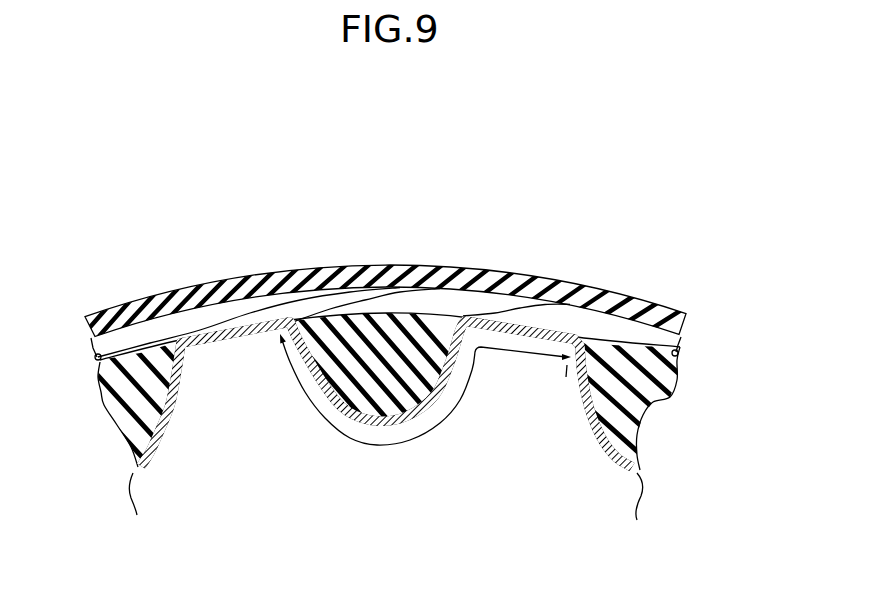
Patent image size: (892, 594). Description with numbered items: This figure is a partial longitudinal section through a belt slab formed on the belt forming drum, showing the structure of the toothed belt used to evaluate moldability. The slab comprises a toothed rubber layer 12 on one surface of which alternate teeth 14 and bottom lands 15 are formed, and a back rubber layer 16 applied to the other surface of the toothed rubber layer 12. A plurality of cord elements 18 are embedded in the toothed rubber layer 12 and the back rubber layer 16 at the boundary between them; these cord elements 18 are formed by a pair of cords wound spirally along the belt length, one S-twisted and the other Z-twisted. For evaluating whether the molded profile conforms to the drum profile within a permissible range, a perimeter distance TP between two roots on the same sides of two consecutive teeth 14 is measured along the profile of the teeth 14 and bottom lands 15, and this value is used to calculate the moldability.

The toothed rubber layer 12 is at (376, 352).
The teeth 14 is at (338, 415).
The bottom lands 15 is at (208, 346).
The back rubber layer 16 is at (470, 268).
The cord elements 18 is at (678, 349).
The perimeter distance TP is at (425, 407).